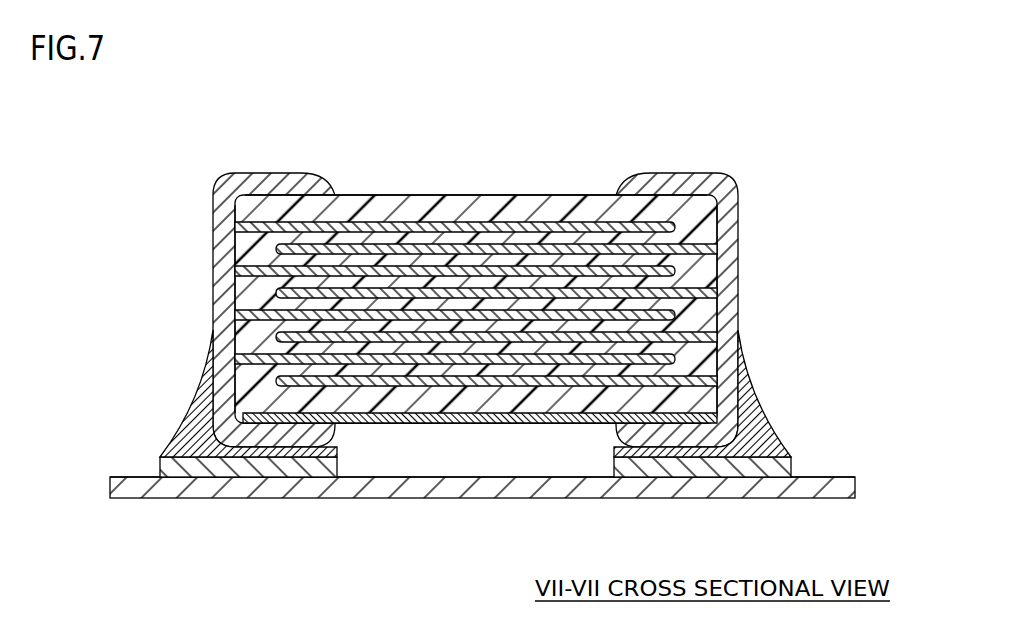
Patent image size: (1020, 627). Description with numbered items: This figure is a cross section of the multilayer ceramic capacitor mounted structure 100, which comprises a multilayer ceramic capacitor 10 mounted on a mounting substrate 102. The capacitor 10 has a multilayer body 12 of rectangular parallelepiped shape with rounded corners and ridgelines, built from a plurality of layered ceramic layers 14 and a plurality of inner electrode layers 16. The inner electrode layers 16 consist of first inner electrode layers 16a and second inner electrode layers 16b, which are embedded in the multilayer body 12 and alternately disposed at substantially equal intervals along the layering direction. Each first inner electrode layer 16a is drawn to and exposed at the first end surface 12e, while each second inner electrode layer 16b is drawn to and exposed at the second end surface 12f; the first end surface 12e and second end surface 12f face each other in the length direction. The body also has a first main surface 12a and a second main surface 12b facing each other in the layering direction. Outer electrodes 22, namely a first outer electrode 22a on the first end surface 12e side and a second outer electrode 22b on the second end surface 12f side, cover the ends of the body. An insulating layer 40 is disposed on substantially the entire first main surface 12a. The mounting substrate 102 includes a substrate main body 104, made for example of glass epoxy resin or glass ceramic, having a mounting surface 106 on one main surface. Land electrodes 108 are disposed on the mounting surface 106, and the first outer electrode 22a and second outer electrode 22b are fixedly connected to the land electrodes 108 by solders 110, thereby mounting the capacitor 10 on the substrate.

The multilayer ceramic capacitor mounted structure 100 is at (303, 146).
The multilayer ceramic capacitor 10 is at (367, 181).
The multilayer body 12 is at (545, 193).
The first main surface 12a is at (515, 424).
The second main surface 12b is at (515, 194).
The first end surface 12e is at (235, 289).
The second end surface 12f is at (717, 315).
The ceramic layer 14 is at (597, 286).
The inner electrode layer 16 is at (195, 523).
The first inner electrode layer 16a is at (399, 268).
The second inner electrode layer 16b is at (462, 292).
The outer electrode 22 is at (318, 523).
The first outer electrode 22a is at (218, 232).
The second outer electrode 22b is at (733, 250).
The insulating layer 40 is at (418, 420).
The mounting substrate 102 is at (132, 470).
The substrate main body 104 is at (540, 492).
The mounting surface 106 is at (411, 477).
The land electrode 108 is at (158, 467).
The solder 110 is at (190, 415).